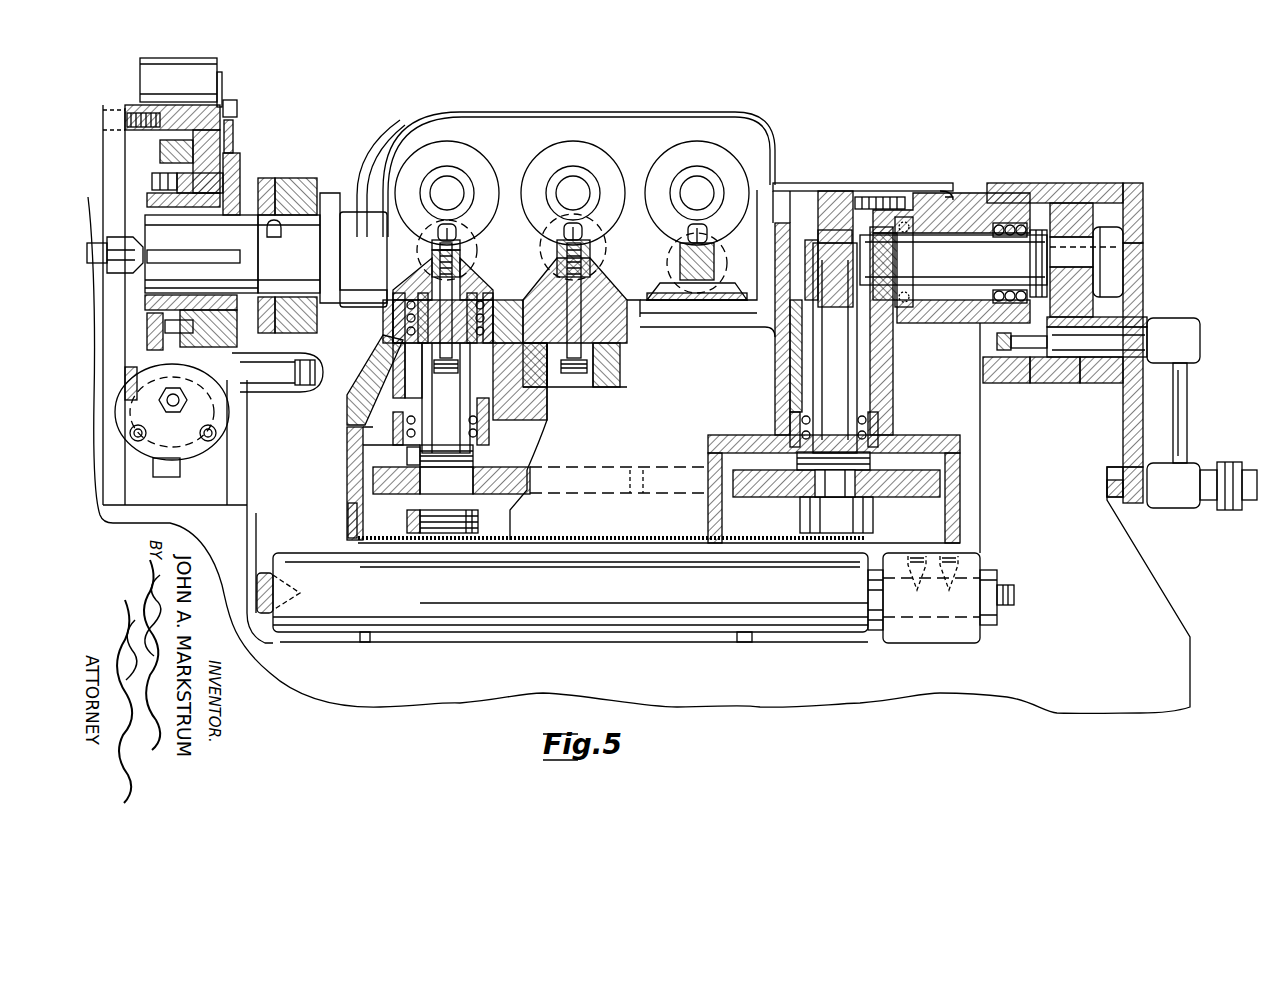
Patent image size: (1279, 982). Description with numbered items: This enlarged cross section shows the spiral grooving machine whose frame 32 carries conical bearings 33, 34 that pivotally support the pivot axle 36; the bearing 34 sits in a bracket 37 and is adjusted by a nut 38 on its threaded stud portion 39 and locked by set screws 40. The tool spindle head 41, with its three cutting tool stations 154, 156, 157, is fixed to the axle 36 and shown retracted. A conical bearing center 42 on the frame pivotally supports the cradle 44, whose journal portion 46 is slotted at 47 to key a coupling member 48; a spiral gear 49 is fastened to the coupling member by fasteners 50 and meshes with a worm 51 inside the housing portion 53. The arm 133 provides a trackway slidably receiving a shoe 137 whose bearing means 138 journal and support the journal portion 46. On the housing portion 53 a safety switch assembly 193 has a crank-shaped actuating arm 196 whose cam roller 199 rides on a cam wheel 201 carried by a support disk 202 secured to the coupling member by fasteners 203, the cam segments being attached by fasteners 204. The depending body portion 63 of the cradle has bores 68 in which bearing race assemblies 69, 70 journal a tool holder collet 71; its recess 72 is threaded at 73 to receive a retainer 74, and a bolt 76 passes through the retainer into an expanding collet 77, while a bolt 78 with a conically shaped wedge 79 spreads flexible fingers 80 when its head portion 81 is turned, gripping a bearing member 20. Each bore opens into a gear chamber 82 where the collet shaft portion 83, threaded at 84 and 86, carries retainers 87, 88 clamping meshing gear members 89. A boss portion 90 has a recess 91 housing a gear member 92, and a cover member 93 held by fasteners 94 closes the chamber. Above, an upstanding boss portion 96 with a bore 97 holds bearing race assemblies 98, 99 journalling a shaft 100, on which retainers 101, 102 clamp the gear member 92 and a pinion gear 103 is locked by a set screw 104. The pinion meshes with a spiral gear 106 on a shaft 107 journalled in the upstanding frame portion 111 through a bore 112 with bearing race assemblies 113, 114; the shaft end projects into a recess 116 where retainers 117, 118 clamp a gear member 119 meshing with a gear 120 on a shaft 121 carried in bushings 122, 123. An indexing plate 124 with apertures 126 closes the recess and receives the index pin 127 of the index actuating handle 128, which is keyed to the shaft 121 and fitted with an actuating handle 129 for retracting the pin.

The bearing member 20 is at (477, 228).
The frame 32 is at (385, 697).
The conical bearing 33 is at (260, 613).
The conical bearing 34 is at (874, 625).
The pivot axle 36 is at (612, 617).
The bracket 37 is at (965, 565).
The nut 38 is at (990, 620).
The threaded stud portion 39 is at (1014, 595).
The set screws 40 is at (933, 581).
The tool spindle head 41 is at (500, 113).
The conical bearing center 42 is at (117, 242).
The cradle 44 is at (363, 235).
The journal portion 46 is at (207, 246).
The slot 47 is at (175, 258).
The coupling member 48 is at (152, 200).
The spiral gear 49 is at (190, 150).
The fastener members 50 is at (222, 181).
The worm 51 is at (150, 375).
The housing portion 53 is at (130, 108).
The depending body portion 63 is at (368, 388).
The cylindrical bore 68 is at (395, 402).
The bearing race assembly 69 is at (395, 318).
The bearing race assembly 70 is at (397, 432).
The tool holder collet 71 is at (478, 292).
The recess 72 is at (520, 397).
The threaded portion 73 is at (530, 393).
The retainer 74 is at (423, 347).
The bolt 76 is at (446, 398).
The expanding collet 77 is at (416, 284).
The bolt 78 is at (460, 258).
The conically shaped wedge 79 is at (438, 246).
The flexible fingers 80 is at (428, 255).
The head portion 81 is at (460, 235).
The gear chamber 82 is at (347, 497).
The shaft portion 83 is at (487, 490).
The threaded portion 84 is at (475, 450).
The threaded portion 86 is at (478, 520).
The retainer 87 is at (407, 455).
The retainer 88 is at (407, 520).
The gear members 89 is at (535, 468).
The enlarged cylindrical boss portion 90 is at (960, 460).
The recess 91 is at (960, 506).
The gear member 92 is at (940, 485).
The cover member 93 is at (548, 537).
The fasteners 94 is at (348, 523).
The upstanding cylindrical boss portion 96 is at (893, 357).
The cylindrical bore 97 is at (800, 373).
The bearing race assembly 98 is at (778, 337).
The bearing race assembly 99 is at (800, 422).
The rotatable shaft 100 is at (840, 403).
The retainer 101 is at (870, 462).
The retainer 102 is at (873, 524).
The pinion gear 103 is at (872, 266).
The set screw 104 is at (810, 245).
The spiral gear 106 is at (840, 192).
The shaft 107 is at (942, 247).
The upstanding portion 111 is at (1075, 184).
The cylindrical bore 112 is at (1000, 222).
The bearing race assembly 113 is at (1035, 228).
The bearing race assembly 114 is at (905, 193).
The recess 116 is at (1130, 184).
The retainer 117 is at (1050, 225).
The retainer 118 is at (1120, 232).
The gear member 119 is at (1095, 292).
The gear 120 is at (1060, 383).
The shaft 121 is at (1150, 333).
The bushing 122 is at (1005, 352).
The bushing 123 is at (1100, 383).
The indexing plate 124 is at (1143, 240).
The apertures 126 is at (1132, 503).
The index pin 127 is at (1107, 487).
The index actuating handle 128 is at (1187, 412).
The actuating handle 129 is at (1224, 464).
The arm 133 is at (300, 180).
The shoe 137 is at (333, 192).
The bearing means 138 is at (258, 246).
The cutting tool station 154 is at (468, 153).
The cutting tool station 156 is at (597, 152).
The cutting tool station 157 is at (688, 148).
The safety switch assembly 193 is at (160, 72).
The crank-shaped actuating arm 196 is at (222, 80).
The cam roller 199 is at (237, 108).
The cam wheel 201 is at (233, 142).
The support disk 202 is at (248, 216).
The fasteners 203 is at (250, 358).
The fasteners 204 is at (240, 166).